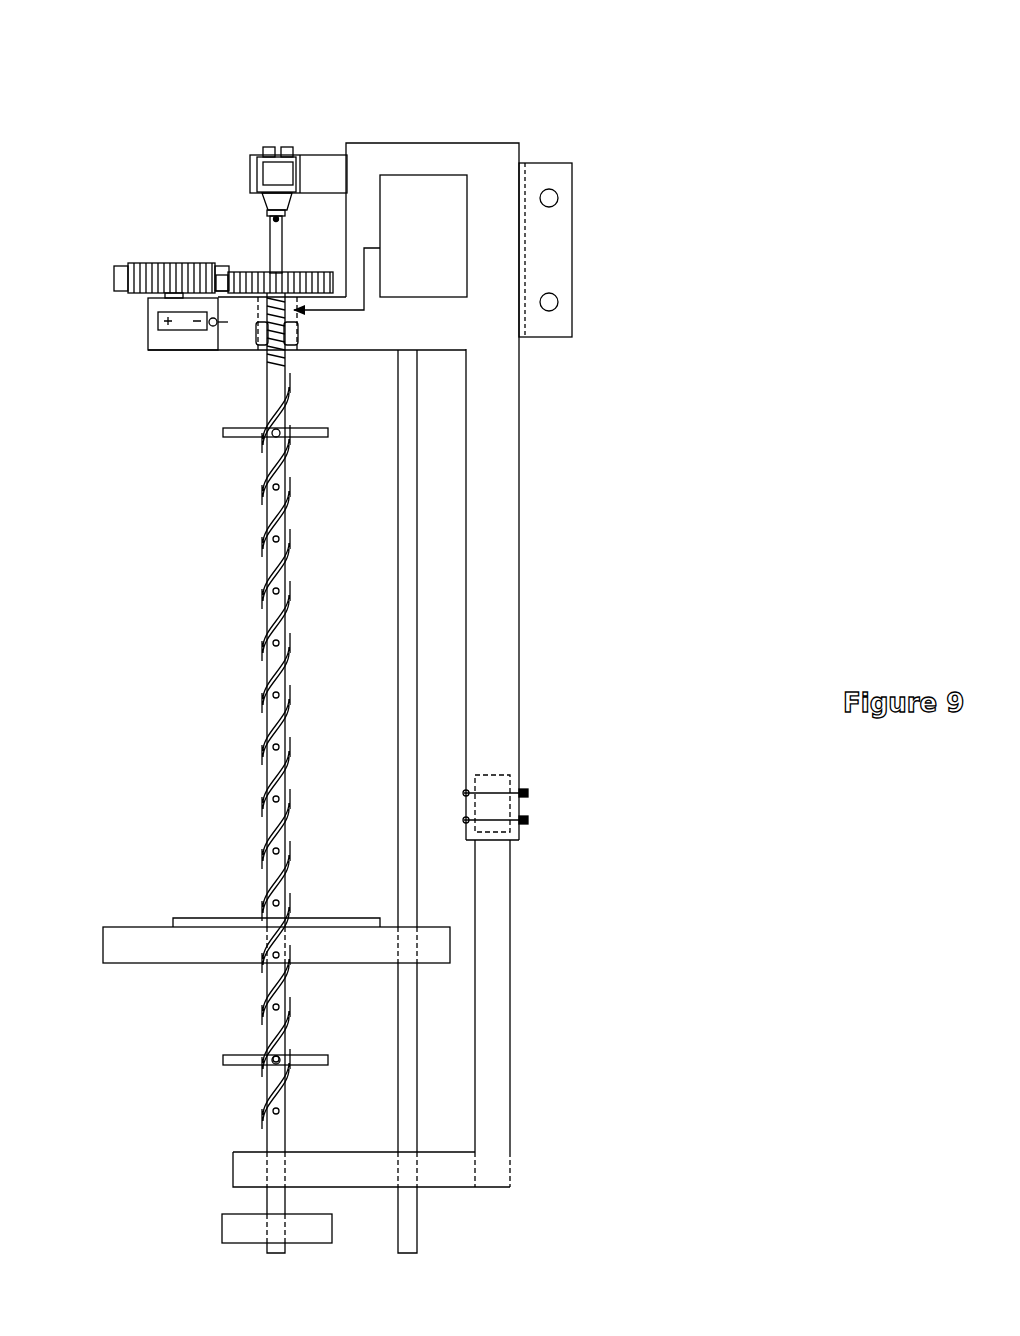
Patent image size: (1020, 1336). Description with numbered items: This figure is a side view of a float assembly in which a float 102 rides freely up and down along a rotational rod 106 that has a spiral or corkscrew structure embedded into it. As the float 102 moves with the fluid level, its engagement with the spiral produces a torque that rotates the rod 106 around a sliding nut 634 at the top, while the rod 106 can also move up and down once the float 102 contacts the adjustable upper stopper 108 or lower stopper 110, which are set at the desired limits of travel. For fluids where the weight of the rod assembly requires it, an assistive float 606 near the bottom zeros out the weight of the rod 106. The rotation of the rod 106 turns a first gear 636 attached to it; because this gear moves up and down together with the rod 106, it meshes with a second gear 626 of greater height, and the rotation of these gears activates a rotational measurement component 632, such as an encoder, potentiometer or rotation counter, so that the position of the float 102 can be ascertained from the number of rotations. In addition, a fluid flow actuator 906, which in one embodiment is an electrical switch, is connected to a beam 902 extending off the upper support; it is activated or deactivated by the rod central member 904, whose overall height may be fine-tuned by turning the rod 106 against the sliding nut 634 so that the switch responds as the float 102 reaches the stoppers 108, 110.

The float 102 is at (151, 920).
The rod 106 is at (261, 653).
The upper stopper 108 is at (222, 439).
The lower stopper 110 is at (221, 1061).
The assistive float 606 is at (214, 1230).
The second gear 626 is at (172, 262).
The rotational measurement component 632 is at (146, 322).
The sliding nut 634 is at (299, 347).
The first gear 636 is at (323, 268).
The beam 902 is at (313, 151).
The rod central member 904 is at (270, 242).
The fluid flow actuator 906 is at (274, 140).